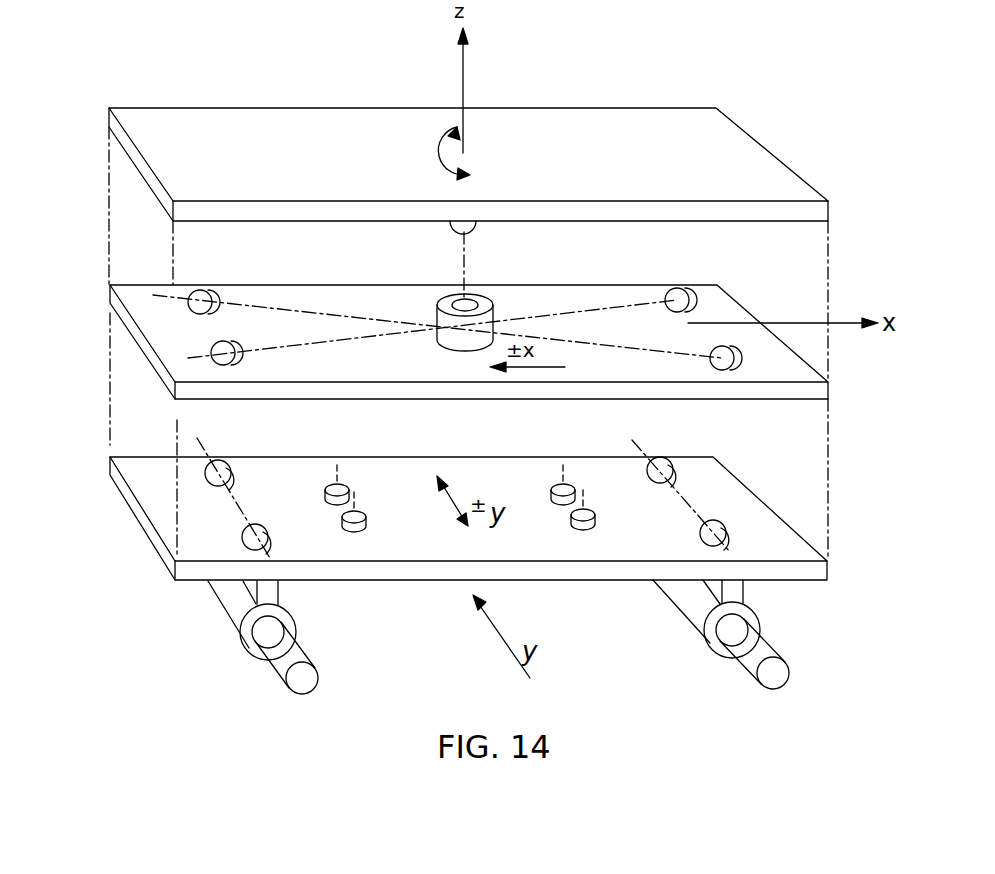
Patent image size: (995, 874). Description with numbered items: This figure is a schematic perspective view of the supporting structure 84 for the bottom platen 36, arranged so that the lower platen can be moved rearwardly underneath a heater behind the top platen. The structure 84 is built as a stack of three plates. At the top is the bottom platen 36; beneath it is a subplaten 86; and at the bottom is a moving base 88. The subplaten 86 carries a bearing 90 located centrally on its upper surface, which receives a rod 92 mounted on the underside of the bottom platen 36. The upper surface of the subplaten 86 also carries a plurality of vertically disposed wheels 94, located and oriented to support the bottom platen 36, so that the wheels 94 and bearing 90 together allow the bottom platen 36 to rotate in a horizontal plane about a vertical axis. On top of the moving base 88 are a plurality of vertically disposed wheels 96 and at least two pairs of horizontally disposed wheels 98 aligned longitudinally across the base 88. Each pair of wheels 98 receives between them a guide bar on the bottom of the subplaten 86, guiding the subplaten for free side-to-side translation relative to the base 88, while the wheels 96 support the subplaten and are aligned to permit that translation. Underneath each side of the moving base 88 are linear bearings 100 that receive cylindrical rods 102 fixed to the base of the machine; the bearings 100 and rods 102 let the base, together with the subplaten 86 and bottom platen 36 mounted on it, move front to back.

The bottom platen 36 is at (732, 137).
The supporting structure 84 is at (508, 536).
The subplaten 86 is at (815, 395).
The moving base 88 is at (790, 573).
The bearing 90 is at (438, 292).
The rod 92 is at (478, 227).
The vertically disposed wheels 94 is at (230, 343).
The vertically disposed wheels 96 is at (245, 530).
The horizontally disposed wheels 98 is at (347, 518).
The linear bearings 100 is at (225, 599).
The cylindrical rods 102 is at (282, 663).